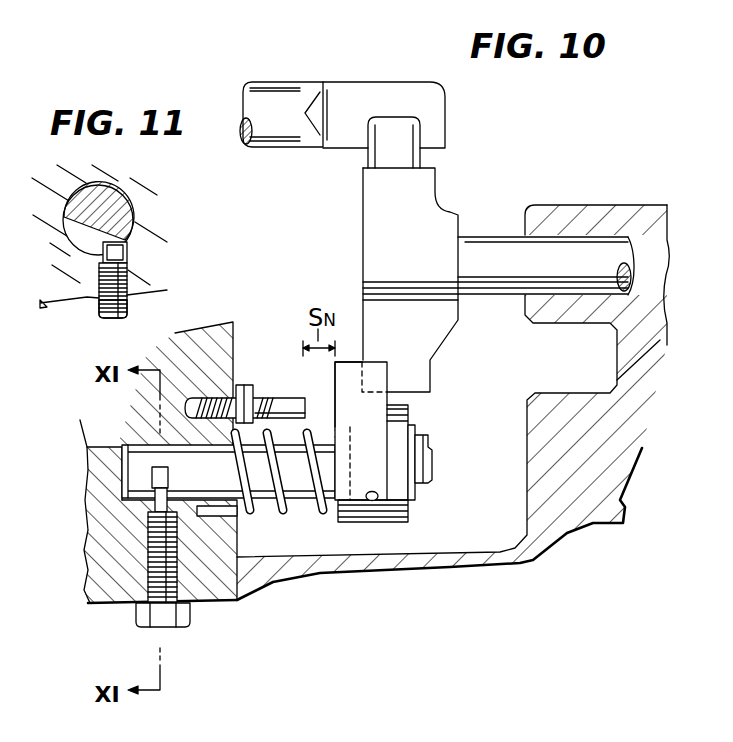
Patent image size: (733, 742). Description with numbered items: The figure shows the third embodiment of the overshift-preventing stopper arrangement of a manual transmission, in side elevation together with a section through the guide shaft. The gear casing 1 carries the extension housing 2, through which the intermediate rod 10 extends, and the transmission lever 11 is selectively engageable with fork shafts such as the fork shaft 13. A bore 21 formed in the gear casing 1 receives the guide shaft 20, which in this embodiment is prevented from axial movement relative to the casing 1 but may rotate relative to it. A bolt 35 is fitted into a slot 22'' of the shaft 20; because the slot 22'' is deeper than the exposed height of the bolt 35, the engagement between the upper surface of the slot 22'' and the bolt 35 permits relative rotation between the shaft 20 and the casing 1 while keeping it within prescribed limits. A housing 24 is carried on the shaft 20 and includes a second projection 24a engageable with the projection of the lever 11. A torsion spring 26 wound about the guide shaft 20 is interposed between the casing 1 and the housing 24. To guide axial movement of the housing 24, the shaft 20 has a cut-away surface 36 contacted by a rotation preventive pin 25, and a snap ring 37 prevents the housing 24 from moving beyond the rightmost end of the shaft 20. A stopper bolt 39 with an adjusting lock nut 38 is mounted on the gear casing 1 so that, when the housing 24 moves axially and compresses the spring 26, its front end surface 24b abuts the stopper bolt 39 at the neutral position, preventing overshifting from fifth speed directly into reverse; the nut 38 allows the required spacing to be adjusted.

In FIG. 10, the gear casing 1 is at (229, 603).
In FIG. 10, the extension housing 2 is at (450, 566).
In FIG. 10, the intermediate rod 10 is at (488, 240).
In FIG. 10, the transmission lever 11 is at (365, 272).
In FIG. 10, the fork shaft 13 is at (360, 80).
In FIG. 10, the guide shaft 20 is at (150, 447).
In FIG. 11, the guide shaft 20 is at (120, 200).
In FIG. 10, the bore 21 is at (87, 470).
In FIG. 10, the slot 22'' is at (184, 528).
In FIG. 11, the slot 22'' is at (74, 272).
In FIG. 10, the housing 24 is at (408, 510).
In FIG. 10, the second projection 24a is at (378, 378).
In FIG. 10, the front end surface 24b is at (333, 377).
In FIG. 10, the rotation preventive pin 25 is at (372, 501).
In FIG. 10, the torsion spring 26 is at (284, 508).
In FIG. 10, the bolt 35 is at (190, 617).
In FIG. 11, the bolt 35 is at (127, 310).
In FIG. 10, the cut-away surface 36 is at (428, 485).
In FIG. 10, the snap ring 37 is at (414, 425).
In FIG. 10, the adjusting lock nut 38 is at (243, 388).
In FIG. 10, the stopper bolt 39 is at (270, 400).